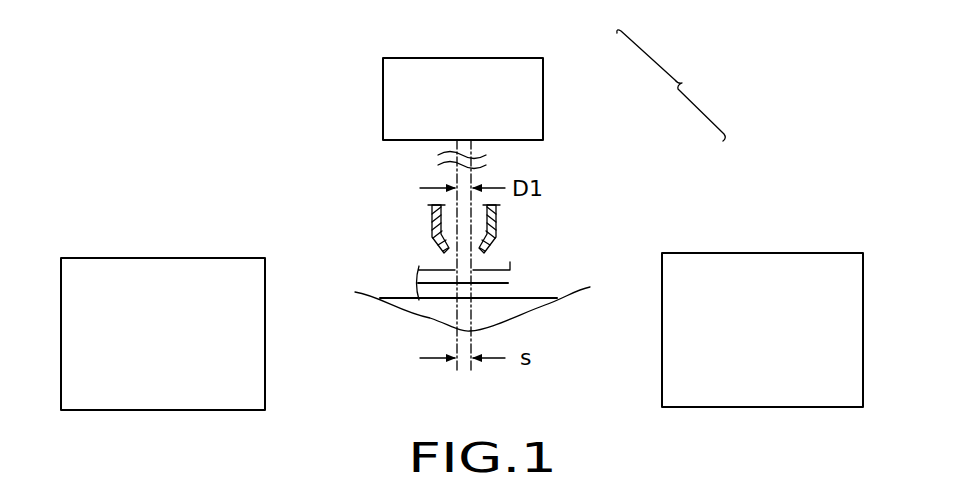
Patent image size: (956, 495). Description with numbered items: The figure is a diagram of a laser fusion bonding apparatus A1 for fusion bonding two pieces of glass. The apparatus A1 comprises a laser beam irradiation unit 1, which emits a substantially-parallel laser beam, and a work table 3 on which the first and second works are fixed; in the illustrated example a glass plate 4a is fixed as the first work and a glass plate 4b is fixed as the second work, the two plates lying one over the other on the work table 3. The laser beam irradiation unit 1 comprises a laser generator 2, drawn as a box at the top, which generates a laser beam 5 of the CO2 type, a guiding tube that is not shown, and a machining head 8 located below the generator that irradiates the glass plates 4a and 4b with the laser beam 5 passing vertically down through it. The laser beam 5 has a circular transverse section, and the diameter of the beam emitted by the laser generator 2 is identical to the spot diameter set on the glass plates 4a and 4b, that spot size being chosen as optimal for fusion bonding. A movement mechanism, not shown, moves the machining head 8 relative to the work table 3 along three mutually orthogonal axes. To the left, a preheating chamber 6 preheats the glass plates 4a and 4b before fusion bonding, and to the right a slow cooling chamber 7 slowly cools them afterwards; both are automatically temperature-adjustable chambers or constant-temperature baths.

The laser fusion bonding apparatus A1 is at (326, 99).
The laser beam irradiation unit 1 is at (671, 85).
The laser generator 2 is at (543, 82).
The work table 3 is at (535, 298).
The glass plate 4a is at (502, 276).
The glass plate 4b is at (502, 292).
The laser beam 5 is at (471, 175).
The preheating chamber 6 is at (167, 258).
The slow cooling chamber 7 is at (770, 253).
The machining head 8 is at (493, 225).